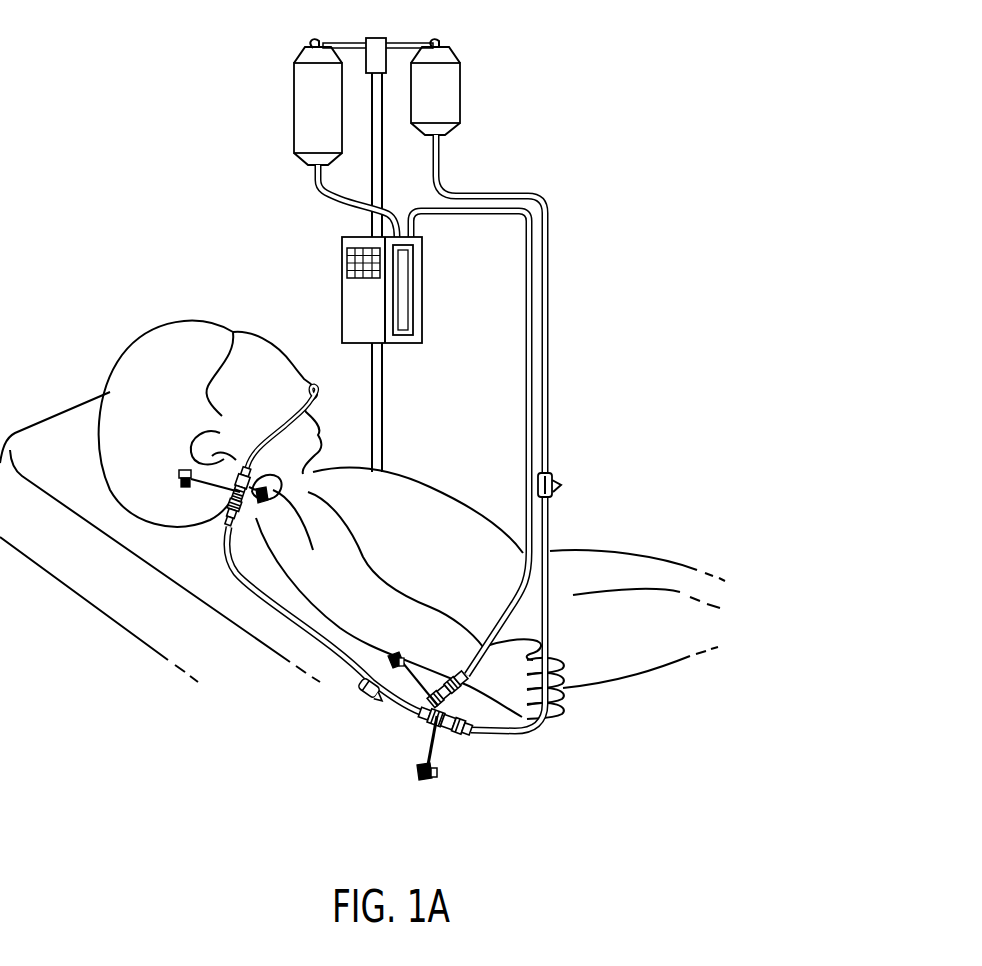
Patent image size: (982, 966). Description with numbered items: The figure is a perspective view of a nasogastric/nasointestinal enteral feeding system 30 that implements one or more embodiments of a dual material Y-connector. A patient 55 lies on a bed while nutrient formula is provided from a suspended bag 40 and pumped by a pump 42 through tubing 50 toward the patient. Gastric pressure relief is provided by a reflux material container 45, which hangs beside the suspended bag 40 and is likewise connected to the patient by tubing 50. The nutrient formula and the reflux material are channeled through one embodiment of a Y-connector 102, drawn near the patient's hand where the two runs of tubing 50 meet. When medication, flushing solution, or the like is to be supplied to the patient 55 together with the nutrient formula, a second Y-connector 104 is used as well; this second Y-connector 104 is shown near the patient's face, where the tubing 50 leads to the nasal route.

The enteral feeding system 30 is at (600, 177).
The suspended bag 40 is at (295, 110).
The reflux material container 45 is at (460, 92).
The tubing 50 is at (485, 192).
The pump 42 is at (423, 318).
The patient 55 is at (182, 558).
The second Y-connector 104 is at (260, 517).
The Y-connector 102 is at (452, 738).